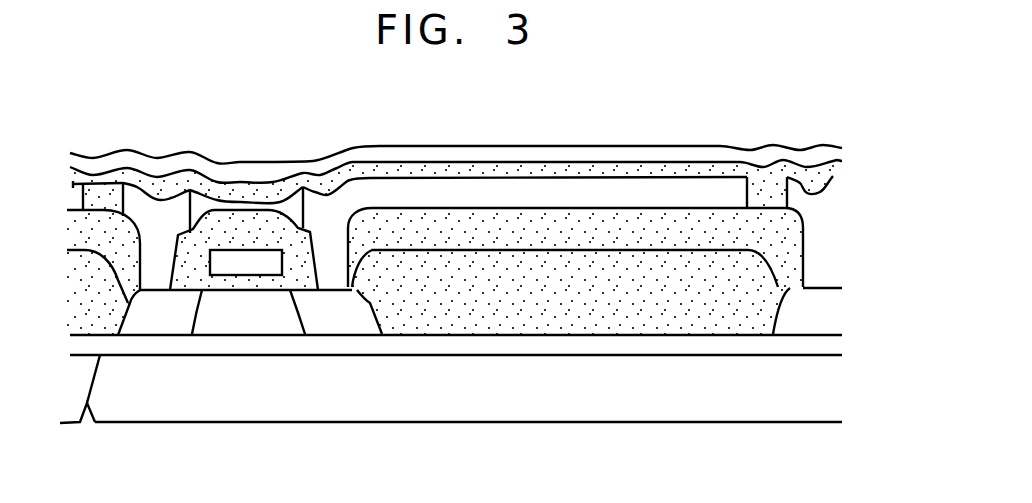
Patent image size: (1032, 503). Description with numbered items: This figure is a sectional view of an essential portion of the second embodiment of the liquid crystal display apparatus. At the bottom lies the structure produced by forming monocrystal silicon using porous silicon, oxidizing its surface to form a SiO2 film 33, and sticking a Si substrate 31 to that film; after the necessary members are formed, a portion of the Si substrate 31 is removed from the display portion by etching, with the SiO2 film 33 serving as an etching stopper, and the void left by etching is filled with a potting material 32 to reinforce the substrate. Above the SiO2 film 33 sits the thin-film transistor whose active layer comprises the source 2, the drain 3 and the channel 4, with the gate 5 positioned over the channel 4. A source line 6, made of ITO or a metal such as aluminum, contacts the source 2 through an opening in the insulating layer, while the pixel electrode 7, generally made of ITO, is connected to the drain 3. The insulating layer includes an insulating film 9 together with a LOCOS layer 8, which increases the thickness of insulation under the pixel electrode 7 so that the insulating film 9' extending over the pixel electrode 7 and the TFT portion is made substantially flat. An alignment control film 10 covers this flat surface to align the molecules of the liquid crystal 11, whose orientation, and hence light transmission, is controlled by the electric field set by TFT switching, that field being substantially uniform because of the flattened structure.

The source 2 is at (155, 325).
The drain 3 is at (335, 325).
The channel 4 is at (218, 325).
The gate 5 is at (260, 268).
The source line 6 is at (137, 196).
The pixel electrode 7 is at (637, 187).
The LOCOS layer 8 is at (627, 327).
The insulating film 9 is at (480, 350).
The insulating film 9' is at (493, 198).
The alignment control film 10 is at (837, 155).
The liquid crystal 11 is at (828, 125).
The Si substrate 31 is at (72, 413).
The potting material 32 is at (483, 408).
The SiO2 film 33 is at (828, 343).